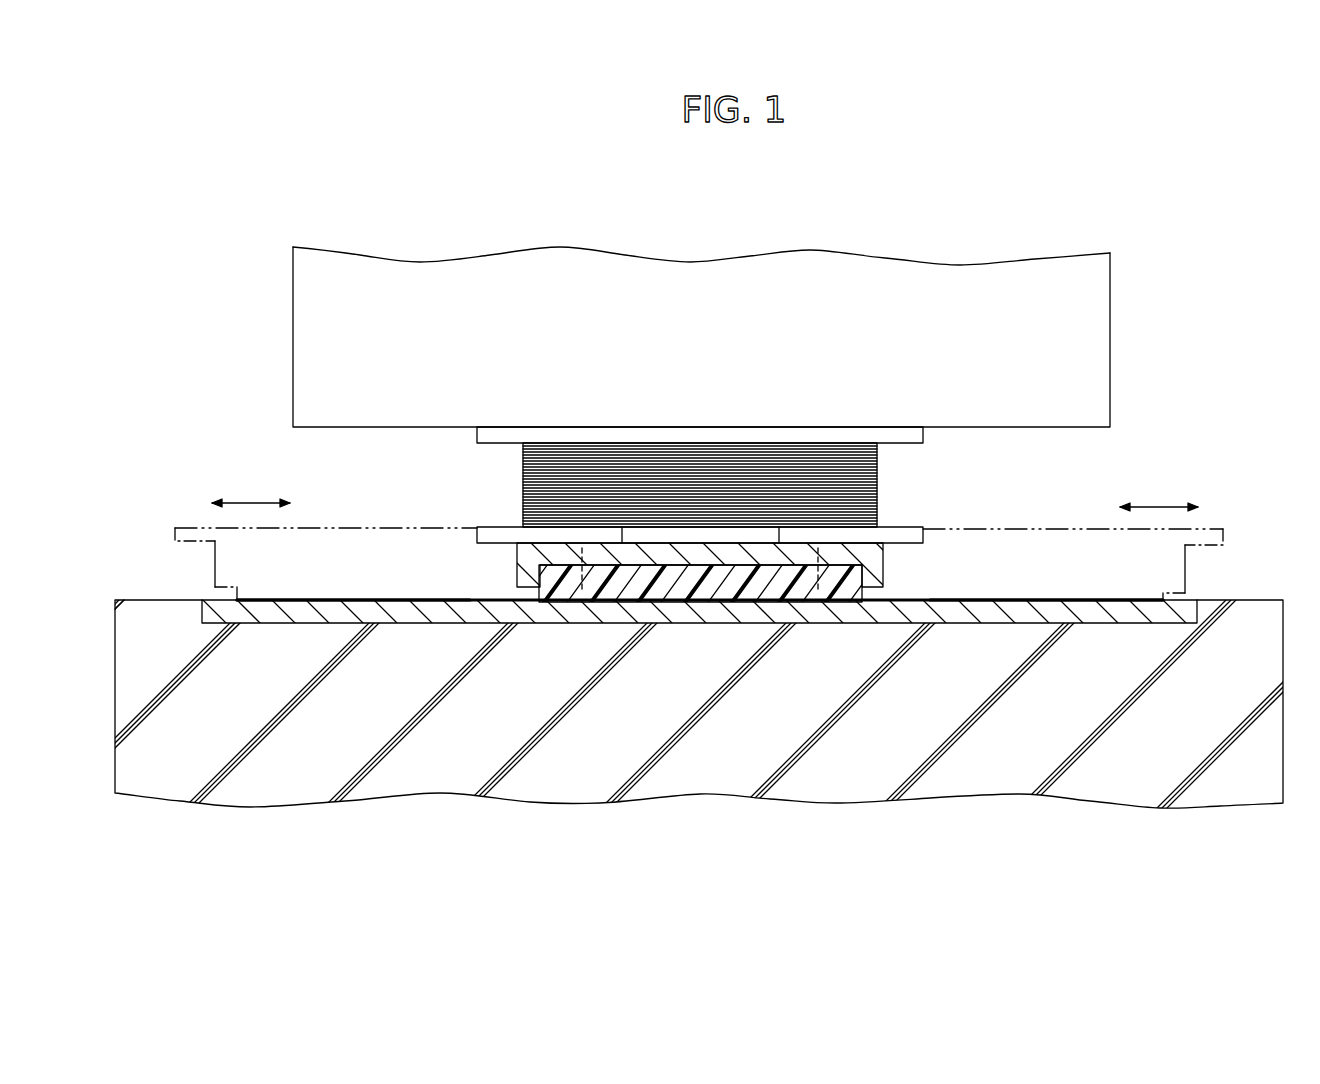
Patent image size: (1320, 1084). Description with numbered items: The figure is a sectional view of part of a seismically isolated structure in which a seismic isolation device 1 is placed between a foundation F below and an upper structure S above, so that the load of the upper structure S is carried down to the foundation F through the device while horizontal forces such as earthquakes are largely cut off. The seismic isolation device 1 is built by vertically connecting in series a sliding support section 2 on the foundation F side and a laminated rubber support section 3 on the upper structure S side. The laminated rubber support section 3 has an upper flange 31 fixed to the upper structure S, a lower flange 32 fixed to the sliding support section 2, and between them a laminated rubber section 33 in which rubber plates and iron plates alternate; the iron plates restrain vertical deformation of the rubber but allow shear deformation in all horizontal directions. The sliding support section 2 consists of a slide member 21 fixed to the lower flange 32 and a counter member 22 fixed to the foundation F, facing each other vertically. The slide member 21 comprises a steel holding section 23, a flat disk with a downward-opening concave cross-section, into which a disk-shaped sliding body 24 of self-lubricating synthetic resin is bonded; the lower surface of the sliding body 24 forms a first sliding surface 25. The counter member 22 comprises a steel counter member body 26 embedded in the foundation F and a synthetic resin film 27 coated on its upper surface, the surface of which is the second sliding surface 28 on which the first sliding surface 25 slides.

The upper structure S is at (1140, 261).
The foundation F is at (1258, 592).
The seismic isolation device 1 is at (1027, 447).
The sliding support section 2 is at (972, 558).
The laminated rubber support section 3 is at (932, 463).
The slide member 21 is at (213, 565).
The counter member 22 is at (974, 597).
The holding section 23 is at (517, 570).
The sliding body 24 is at (680, 603).
The first sliding surface 25 is at (722, 605).
The counter member body 26 is at (822, 618).
The film 27 is at (353, 598).
The second sliding surface 28 is at (1043, 600).
The upper flange 31 is at (477, 432).
The lower flange 32 is at (477, 535).
The laminated rubber section 33 is at (523, 492).